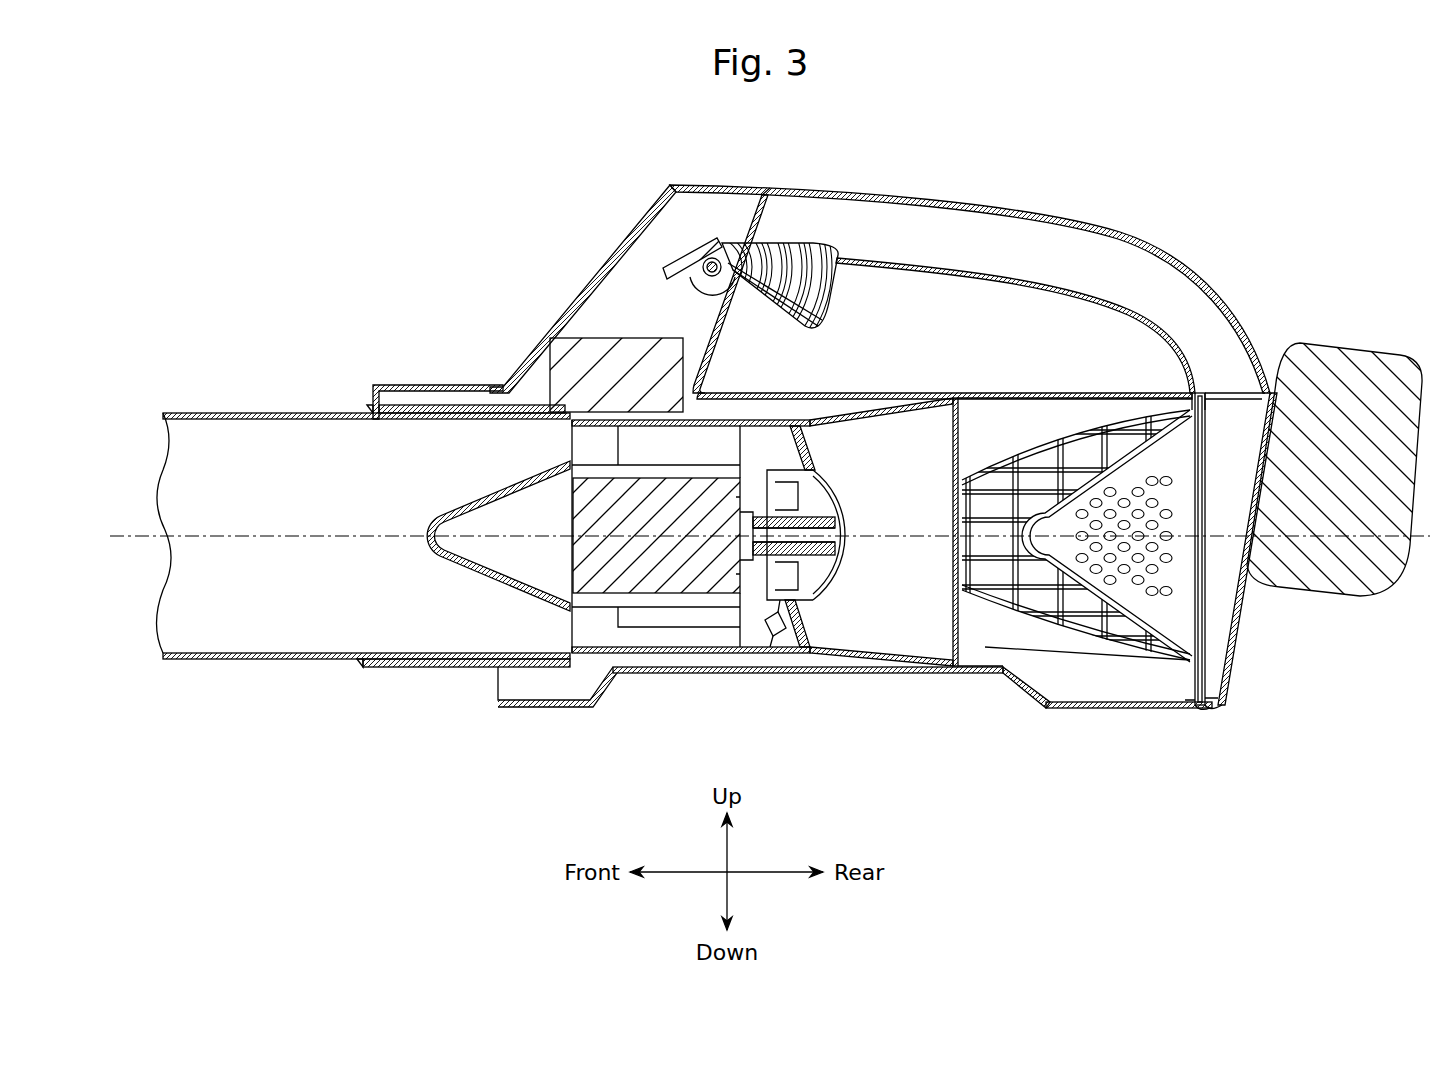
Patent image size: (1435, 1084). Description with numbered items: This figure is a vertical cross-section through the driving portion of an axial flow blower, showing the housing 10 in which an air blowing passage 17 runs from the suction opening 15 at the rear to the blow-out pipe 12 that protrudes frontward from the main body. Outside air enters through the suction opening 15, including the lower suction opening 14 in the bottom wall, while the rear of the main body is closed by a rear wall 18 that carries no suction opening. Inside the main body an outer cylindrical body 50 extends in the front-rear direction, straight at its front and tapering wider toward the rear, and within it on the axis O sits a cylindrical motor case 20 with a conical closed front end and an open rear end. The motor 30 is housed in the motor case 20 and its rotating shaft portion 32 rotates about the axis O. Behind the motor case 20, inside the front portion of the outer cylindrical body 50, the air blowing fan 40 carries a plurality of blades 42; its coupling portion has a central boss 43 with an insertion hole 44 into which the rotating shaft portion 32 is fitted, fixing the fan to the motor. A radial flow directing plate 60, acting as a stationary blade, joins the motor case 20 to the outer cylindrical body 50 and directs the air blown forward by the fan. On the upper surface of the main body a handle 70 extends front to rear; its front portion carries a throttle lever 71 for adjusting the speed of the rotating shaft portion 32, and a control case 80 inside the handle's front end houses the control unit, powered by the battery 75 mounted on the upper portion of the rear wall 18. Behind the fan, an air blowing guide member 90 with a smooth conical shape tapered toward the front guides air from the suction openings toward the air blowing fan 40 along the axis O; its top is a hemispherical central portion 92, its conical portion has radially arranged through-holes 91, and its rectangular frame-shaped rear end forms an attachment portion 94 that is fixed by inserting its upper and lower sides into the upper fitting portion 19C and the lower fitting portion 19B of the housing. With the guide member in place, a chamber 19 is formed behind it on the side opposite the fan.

The axis O is at (130, 533).
The housing 10 is at (975, 393).
The blow-out pipe 12 is at (257, 413).
The lower suction opening 14 is at (1165, 708).
The suction opening 15 is at (1008, 640).
The air blowing passage 17 is at (228, 615).
The rear wall 18 is at (1235, 630).
The chamber 19 is at (1228, 475).
The lower fitting portion 19B is at (1185, 706).
The upper fitting portion 19C is at (1190, 402).
The motor case 20 is at (453, 570).
The motor 30 is at (705, 598).
The rotating shaft portion 32 is at (785, 505).
The air blowing fan 40 is at (807, 650).
The blades 42 is at (795, 430).
The boss 43 is at (825, 570).
The insertion hole 44 is at (793, 532).
The outer cylindrical body 50 is at (700, 612).
The flow directing plate 60 is at (708, 440).
The handle 70 is at (937, 195).
The throttle lever 71 is at (838, 300).
The battery 75 is at (1355, 343).
The control case 80 is at (630, 338).
The air blowing guide member 90 is at (1087, 577).
The through-holes 91 is at (1130, 487).
The central portion (top portion) 92 is at (1025, 500).
The attachment portion 94 is at (1212, 706).